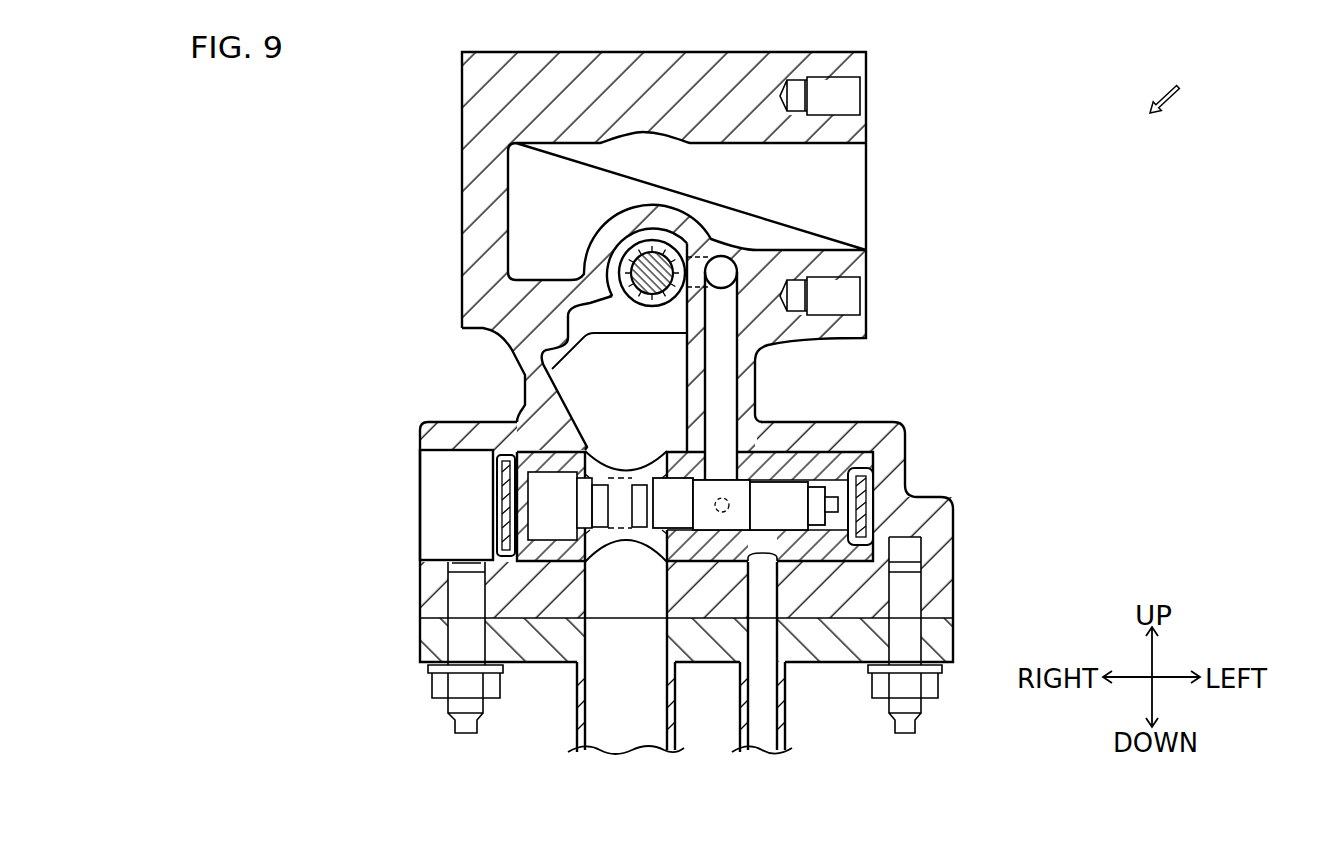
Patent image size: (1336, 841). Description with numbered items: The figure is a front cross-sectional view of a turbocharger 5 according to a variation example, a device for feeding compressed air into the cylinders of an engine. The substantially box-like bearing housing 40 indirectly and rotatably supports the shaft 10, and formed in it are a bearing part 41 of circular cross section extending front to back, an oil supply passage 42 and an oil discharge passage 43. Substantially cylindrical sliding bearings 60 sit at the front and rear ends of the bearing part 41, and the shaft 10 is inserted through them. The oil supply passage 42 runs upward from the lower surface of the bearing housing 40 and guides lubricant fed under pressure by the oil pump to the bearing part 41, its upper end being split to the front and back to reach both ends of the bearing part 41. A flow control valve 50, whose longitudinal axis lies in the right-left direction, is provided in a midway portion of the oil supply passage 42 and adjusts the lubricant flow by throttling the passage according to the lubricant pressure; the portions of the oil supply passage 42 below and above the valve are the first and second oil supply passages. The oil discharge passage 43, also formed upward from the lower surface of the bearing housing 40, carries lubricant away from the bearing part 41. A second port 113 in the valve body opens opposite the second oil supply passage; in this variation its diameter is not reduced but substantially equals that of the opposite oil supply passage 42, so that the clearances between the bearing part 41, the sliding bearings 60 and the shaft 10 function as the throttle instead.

The turbocharger 5 is at (1171, 86).
The shaft 10 is at (638, 247).
The bearing housing 40 is at (459, 92).
The bearing part 41 is at (638, 298).
The oil supply passage 42 is at (723, 390).
The oil discharge passage 43 is at (600, 700).
The flow control valve 50 is at (849, 443).
The sliding bearings 60 is at (662, 245).
The second port 113 is at (715, 448).